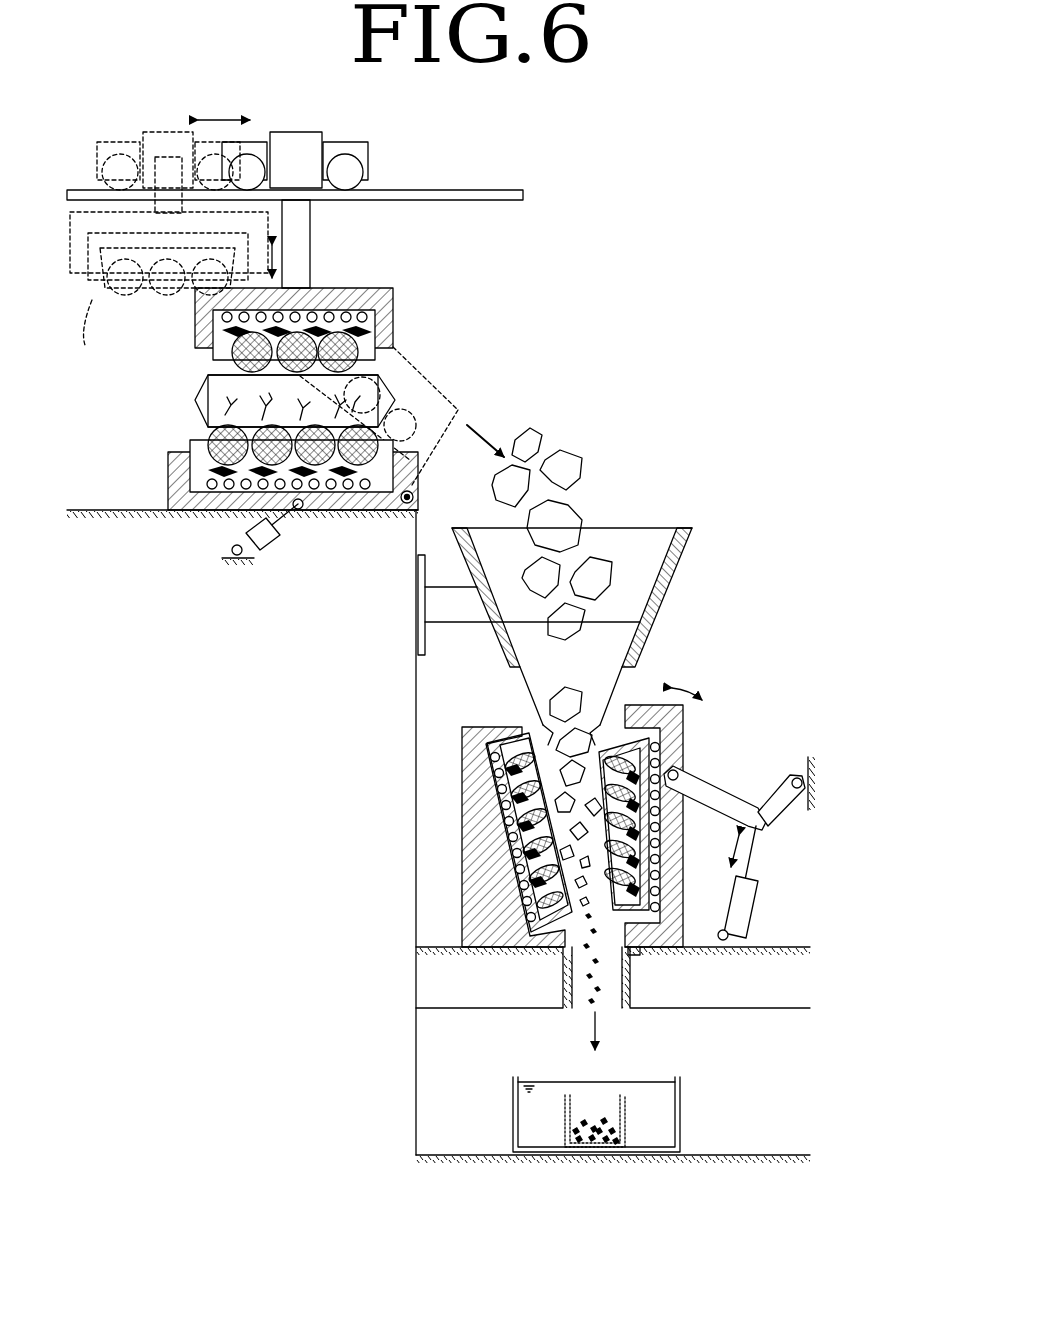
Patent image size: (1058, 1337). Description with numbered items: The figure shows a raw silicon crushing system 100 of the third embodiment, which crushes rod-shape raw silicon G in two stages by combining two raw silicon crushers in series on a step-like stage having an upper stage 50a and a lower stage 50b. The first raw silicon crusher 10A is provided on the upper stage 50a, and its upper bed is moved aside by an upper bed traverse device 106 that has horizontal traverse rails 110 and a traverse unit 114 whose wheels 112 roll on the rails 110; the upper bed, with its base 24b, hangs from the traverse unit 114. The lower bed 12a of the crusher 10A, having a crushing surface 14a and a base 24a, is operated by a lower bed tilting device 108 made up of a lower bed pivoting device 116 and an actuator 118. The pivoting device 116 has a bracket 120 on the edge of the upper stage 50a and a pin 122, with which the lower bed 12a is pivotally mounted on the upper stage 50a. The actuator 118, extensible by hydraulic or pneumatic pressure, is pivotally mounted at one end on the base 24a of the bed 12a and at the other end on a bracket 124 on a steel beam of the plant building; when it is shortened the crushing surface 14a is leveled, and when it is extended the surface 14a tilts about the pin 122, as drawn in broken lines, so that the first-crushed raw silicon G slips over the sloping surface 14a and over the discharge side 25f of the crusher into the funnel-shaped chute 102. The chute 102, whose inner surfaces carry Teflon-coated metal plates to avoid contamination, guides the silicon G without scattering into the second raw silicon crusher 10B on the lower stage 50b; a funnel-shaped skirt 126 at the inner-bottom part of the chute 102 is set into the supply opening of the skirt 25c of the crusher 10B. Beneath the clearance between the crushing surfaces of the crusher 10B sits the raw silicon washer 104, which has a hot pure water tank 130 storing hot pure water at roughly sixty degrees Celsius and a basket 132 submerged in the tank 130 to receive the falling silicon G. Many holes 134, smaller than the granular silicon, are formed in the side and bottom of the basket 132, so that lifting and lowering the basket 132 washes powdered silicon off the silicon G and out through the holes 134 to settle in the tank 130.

The raw silicon crushing system 100 is at (774, 132).
The upper bed traverse device 106 is at (295, 215).
The traverse unit 114 is at (308, 142).
The wheels 112 is at (345, 168).
The horizontal traverse rails 110 is at (380, 190).
The base 24b is at (368, 288).
The raw silicon crusher 10A is at (300, 378).
The lower bed 12a is at (274, 374).
The crushing surface 14a is at (197, 422).
The base 24a is at (170, 460).
The upper stage 50a is at (95, 510).
The discharge outlet 25f is at (470, 422).
The raw silicon G is at (566, 470).
The actuator 118 is at (247, 540).
The bracket 124 is at (232, 553).
The lower bed pivoting device 116 is at (339, 549).
The bracket 120 is at (398, 503).
The pin 122 is at (403, 512).
The lower bed tilting device 108 is at (280, 570).
The chute 102 is at (677, 580).
The funnel-shaped skirt 126 is at (613, 682).
The raw silicon crusher 10B is at (632, 825).
The skirt 25c is at (540, 730).
The lower stage 50b is at (772, 947).
The hot pure water tank 130 is at (680, 1102).
The basket 132 is at (625, 1110).
The raw silicon washer 104 is at (661, 1136).
The holes 134 is at (627, 1133).